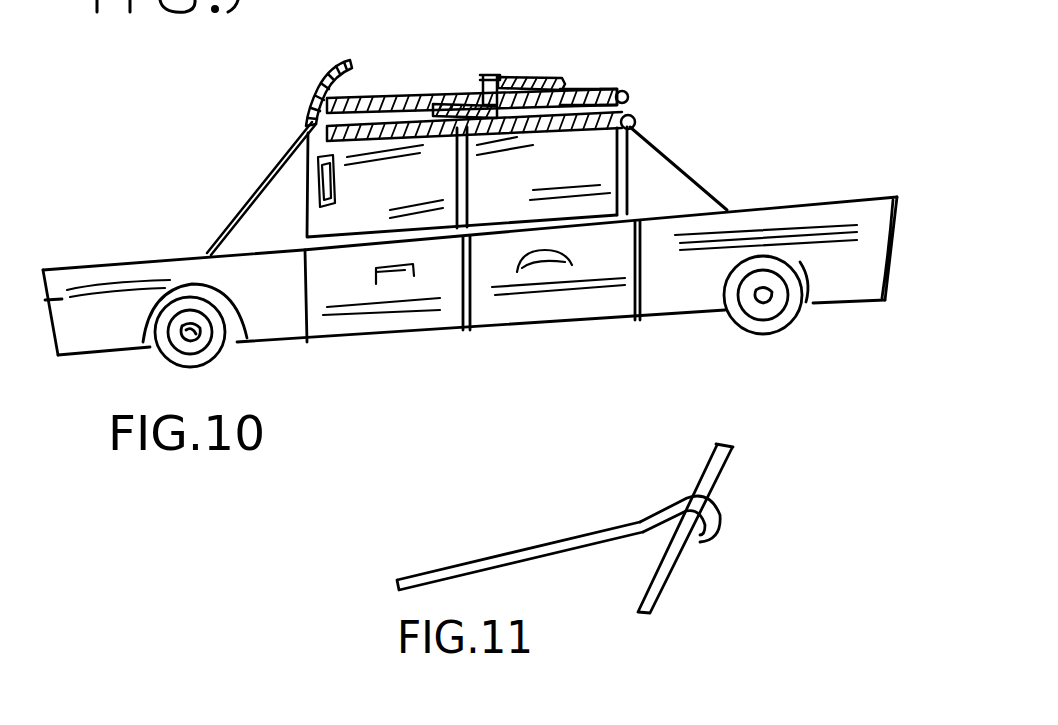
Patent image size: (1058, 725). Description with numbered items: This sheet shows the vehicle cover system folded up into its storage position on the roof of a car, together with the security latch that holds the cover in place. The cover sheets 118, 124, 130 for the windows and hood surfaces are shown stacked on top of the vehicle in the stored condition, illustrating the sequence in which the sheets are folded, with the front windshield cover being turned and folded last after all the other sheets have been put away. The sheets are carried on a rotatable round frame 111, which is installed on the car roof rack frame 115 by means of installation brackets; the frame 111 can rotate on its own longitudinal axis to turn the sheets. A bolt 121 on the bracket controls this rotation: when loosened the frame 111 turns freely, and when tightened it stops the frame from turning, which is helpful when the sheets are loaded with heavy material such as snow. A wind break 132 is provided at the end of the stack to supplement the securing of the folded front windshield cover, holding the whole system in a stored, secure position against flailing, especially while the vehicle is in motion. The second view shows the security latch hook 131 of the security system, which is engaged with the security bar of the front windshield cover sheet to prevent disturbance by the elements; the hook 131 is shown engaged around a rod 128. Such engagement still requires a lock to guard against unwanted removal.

In FIG. 10, the rotatable round frame 111 is at (628, 106).
In FIG. 10, the car roof rack frame 115 is at (632, 122).
In FIG. 10, the cover sheet 118 is at (405, 125).
In FIG. 10, the bolt 121 is at (330, 100).
In FIG. 10, the cover sheet 124 is at (567, 80).
In FIG. 11, the support rod 128 is at (720, 470).
In FIG. 10, the cover sheet 130 is at (628, 90).
In FIG. 10, the security latch hook 131 is at (497, 77).
In FIG. 11, the security latch hook 131 is at (540, 548).
In FIG. 10, the wind break 132 is at (318, 72).